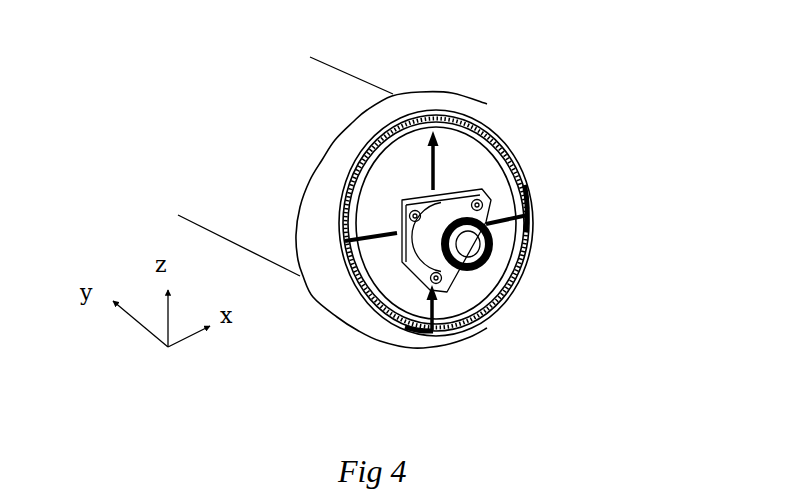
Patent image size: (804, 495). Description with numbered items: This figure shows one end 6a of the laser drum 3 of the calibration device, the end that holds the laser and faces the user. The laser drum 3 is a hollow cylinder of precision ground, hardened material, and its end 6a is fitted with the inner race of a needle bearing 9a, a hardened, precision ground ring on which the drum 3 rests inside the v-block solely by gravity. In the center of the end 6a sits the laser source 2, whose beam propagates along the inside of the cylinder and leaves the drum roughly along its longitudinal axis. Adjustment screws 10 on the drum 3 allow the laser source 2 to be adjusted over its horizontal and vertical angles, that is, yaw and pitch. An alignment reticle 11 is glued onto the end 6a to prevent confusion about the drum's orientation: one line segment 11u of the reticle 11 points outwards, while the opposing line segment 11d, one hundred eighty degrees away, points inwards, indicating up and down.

The laser drum 3 is at (268, 72).
The needle bearing 9a is at (318, 165).
The end 6a is at (496, 97).
The alignment reticle 11 is at (472, 155).
The line segment 11u is at (440, 159).
The line segment 11d is at (440, 309).
The laser source 2 is at (494, 241).
The adjustment screws 10 is at (432, 274).